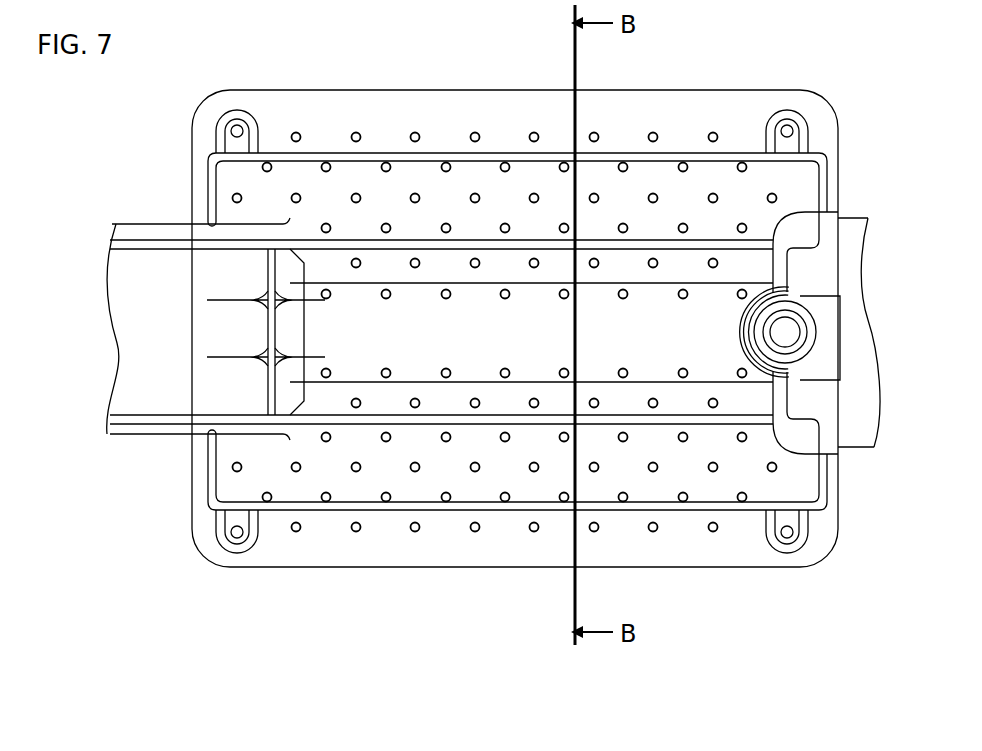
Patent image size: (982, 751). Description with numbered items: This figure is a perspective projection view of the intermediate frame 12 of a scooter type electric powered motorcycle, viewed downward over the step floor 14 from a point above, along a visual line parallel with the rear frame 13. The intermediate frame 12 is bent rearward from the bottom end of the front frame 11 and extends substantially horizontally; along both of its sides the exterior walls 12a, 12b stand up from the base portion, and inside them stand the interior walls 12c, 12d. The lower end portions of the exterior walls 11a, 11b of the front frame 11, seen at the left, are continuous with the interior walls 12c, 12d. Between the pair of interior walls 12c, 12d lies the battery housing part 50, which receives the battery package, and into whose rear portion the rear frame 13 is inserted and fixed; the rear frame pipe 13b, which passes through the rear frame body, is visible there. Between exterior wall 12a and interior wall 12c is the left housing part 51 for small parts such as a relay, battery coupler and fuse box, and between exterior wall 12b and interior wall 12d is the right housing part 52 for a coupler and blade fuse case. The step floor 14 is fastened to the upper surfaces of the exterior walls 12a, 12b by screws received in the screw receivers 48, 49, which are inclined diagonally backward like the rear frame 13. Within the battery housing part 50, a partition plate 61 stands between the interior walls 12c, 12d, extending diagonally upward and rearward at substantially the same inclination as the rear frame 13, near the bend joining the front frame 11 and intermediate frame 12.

The front frame 11 is at (175, 346).
The exterior wall of front frame 11a is at (162, 420).
The exterior wall of front frame 11b is at (153, 240).
The intermediate frame 12 is at (468, 339).
The exterior wall of intermediate frame 12a is at (398, 507).
The exterior wall of intermediate frame 12b is at (400, 152).
The interior wall of intermediate frame 12c is at (465, 420).
The interior wall of intermediate frame 12d is at (425, 248).
The rear frame 13 is at (795, 417).
The rear frame pipe 13b is at (815, 326).
The step floor 14 is at (651, 90).
The screw receiver 48 is at (225, 115).
The screw receiver 49 is at (800, 118).
The battery housing part 50 is at (531, 346).
The left housing part 51 is at (635, 479).
The right housing part 52 is at (517, 210).
The partition plate 61 is at (275, 333).